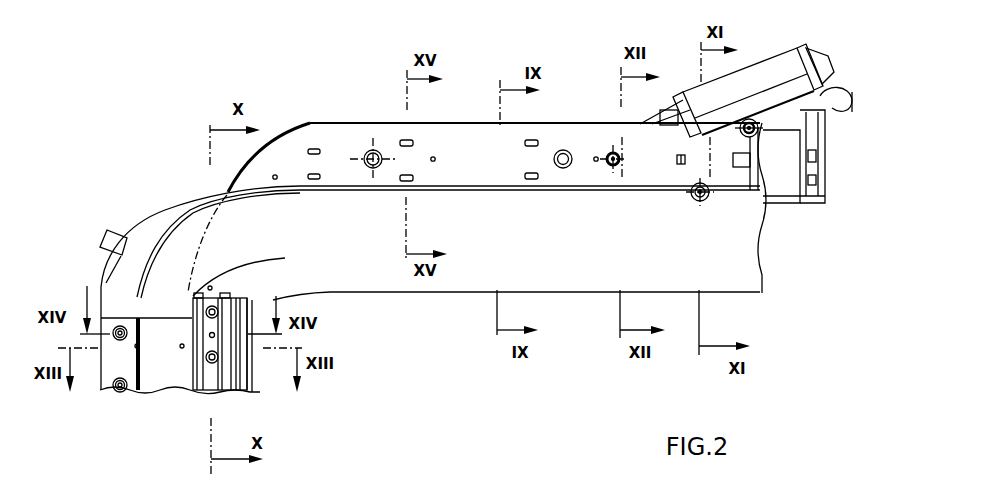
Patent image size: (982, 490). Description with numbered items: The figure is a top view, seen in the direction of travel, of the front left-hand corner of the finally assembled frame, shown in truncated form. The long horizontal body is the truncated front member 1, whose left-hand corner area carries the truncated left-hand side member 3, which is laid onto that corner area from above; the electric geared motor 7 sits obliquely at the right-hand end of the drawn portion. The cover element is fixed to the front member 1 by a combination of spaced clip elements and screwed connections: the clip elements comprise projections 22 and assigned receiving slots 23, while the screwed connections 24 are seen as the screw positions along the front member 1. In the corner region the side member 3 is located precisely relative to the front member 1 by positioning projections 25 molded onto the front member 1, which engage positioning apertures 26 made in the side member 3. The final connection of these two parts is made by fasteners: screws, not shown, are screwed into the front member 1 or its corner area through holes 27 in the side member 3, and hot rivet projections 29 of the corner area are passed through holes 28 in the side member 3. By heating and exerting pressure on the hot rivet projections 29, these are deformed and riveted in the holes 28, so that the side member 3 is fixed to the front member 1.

The front member 1 is at (417, 301).
The side member 3 is at (91, 385).
The electric geared motor 7 is at (762, 48).
The projections 22 is at (407, 140).
The receiving slots 23 is at (438, 158).
The screwed connections 24 is at (276, 174).
The positioning projections 25 is at (205, 362).
The positioning apertures 26 is at (205, 364).
The holes 27 is at (120, 326).
The holes 28 is at (250, 340).
The hot rivet projections 29 is at (214, 306).